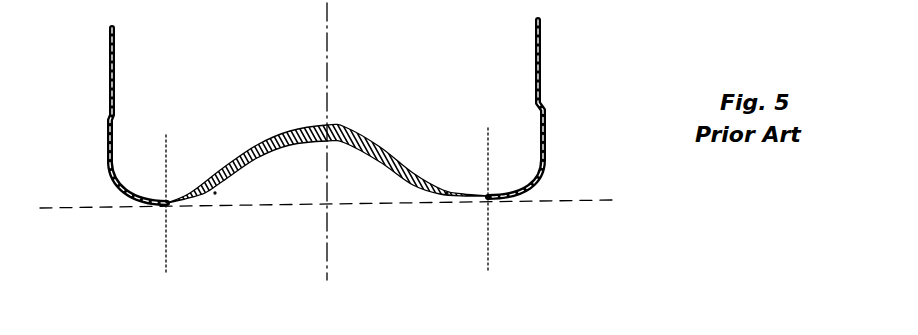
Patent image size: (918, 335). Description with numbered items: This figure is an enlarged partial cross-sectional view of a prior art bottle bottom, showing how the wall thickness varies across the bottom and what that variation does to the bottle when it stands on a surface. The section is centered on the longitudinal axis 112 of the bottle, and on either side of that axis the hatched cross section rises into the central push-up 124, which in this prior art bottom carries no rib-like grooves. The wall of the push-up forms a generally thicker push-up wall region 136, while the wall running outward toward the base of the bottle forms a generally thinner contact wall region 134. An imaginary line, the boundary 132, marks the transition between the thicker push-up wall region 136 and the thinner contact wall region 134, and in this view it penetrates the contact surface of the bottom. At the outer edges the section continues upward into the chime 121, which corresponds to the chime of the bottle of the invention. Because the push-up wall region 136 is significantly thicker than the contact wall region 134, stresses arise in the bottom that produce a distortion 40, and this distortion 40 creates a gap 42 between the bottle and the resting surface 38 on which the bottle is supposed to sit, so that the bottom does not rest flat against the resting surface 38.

The longitudinal axis 112 is at (325, 68).
The push-up 124 is at (340, 143).
The push-up wall region 136 is at (243, 157).
The contact wall region 134 is at (123, 183).
The chime 121 is at (533, 178).
The boundary 132 is at (167, 154).
The resting surface 38 is at (585, 202).
The gap 42 is at (170, 200).
The distortion 40 is at (217, 195).